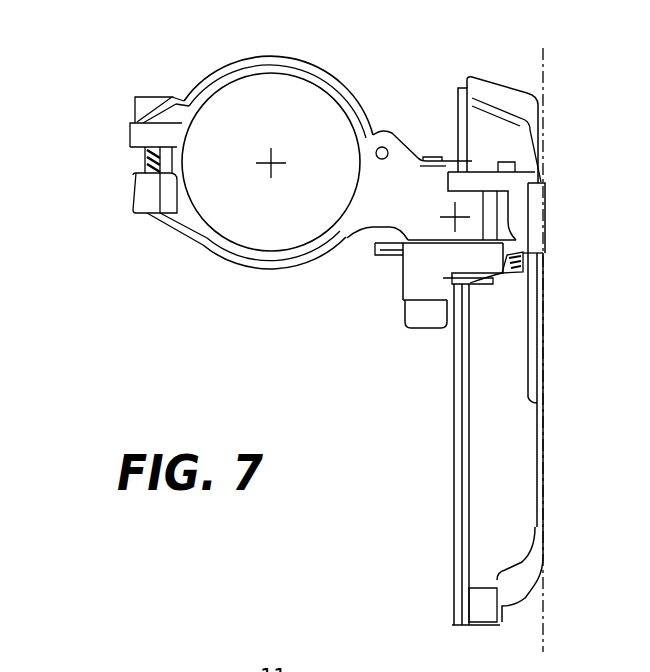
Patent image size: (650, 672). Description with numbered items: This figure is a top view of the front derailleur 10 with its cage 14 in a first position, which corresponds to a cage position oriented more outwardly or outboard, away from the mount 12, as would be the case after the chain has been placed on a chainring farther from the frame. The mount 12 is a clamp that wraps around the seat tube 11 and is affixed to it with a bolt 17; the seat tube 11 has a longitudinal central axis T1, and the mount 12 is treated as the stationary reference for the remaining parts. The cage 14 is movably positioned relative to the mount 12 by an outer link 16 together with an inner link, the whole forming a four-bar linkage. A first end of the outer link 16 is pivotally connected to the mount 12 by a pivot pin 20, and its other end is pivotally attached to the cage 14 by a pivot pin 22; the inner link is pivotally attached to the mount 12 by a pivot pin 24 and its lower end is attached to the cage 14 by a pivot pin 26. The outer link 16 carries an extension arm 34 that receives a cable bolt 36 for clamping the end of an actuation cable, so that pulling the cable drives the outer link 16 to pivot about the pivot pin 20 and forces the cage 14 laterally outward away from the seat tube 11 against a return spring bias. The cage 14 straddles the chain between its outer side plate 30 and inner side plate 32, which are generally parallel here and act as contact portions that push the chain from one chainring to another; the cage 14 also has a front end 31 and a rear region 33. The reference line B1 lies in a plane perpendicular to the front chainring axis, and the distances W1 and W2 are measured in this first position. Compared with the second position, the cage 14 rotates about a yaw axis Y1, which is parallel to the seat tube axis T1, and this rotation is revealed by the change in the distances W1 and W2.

The front derailleur 10 is at (112, 182).
The seat tube 11 is at (310, 103).
The mount 12 is at (257, 270).
The cage 14 is at (537, 422).
The outer link 16 is at (508, 182).
The bolt 17 is at (137, 110).
The pivot pin 20 is at (472, 288).
The pivot pin 22 is at (522, 275).
The pivot pin 24 is at (390, 255).
The pivot pin 26 is at (432, 157).
The outer side plate 30 is at (542, 462).
The front end 31 is at (492, 82).
The inner side plate 32 is at (453, 470).
The rear region 33 is at (455, 627).
The extension arm 34 is at (415, 285).
The cable bolt 36 is at (420, 330).
The longitudinal central axis T1 is at (265, 168).
The yaw axis Y1 is at (522, 236).
The distance W1 is at (508, 107).
The distance W2 is at (502, 553).
The reference line B1 is at (545, 630).